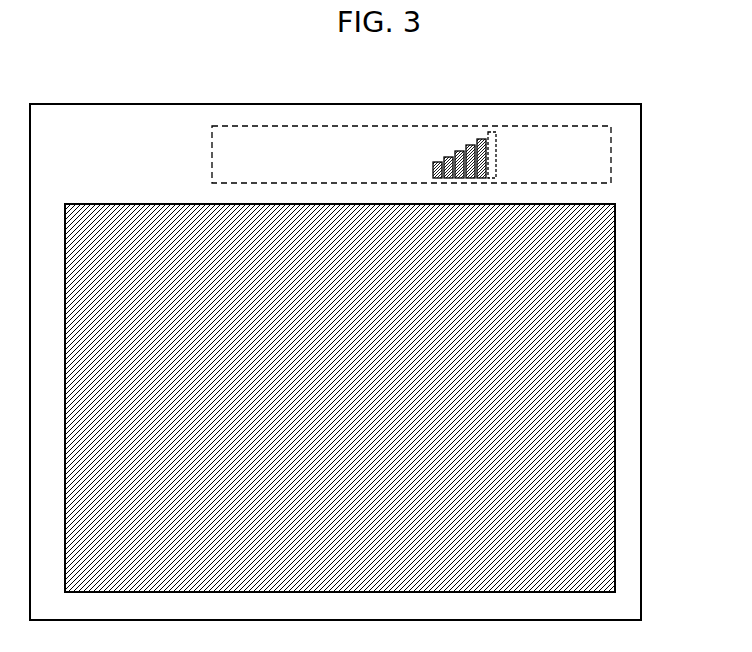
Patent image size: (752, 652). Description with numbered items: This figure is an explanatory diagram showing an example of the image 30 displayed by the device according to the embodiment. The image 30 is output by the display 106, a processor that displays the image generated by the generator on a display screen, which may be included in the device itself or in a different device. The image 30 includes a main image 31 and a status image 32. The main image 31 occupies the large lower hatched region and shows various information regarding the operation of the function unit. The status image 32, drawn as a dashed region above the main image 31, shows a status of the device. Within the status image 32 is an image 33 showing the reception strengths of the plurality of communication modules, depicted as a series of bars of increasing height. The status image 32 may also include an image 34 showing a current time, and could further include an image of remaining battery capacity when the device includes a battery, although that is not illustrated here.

The display 106 is at (568, 105).
The image 30 is at (397, 324).
The main image 31 is at (374, 388).
The status image 32 is at (447, 119).
The image showing reception strengths 33 is at (460, 132).
The image showing current time 34 is at (536, 132).